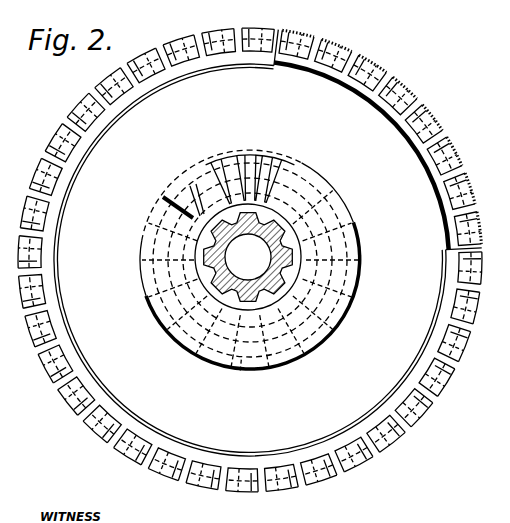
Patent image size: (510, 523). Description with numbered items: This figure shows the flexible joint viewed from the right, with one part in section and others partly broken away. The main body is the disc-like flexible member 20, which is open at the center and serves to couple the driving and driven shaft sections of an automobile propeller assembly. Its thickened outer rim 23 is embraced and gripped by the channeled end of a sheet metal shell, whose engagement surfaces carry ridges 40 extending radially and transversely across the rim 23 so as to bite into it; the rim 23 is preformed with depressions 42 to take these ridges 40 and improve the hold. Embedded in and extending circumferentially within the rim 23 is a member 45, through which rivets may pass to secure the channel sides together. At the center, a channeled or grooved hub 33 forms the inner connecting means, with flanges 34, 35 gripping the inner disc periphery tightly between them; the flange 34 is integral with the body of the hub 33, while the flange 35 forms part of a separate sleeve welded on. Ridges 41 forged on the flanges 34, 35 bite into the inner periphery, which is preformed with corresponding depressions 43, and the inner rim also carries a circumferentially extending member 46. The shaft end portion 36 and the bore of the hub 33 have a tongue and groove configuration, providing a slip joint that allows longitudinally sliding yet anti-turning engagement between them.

The disc-like flexible member 20 is at (250, 260).
The rim 23 is at (450, 181).
The hub 33 is at (282, 220).
The flange 34 is at (226, 162).
The flange 35 is at (340, 303).
The shaft end portion 36 is at (288, 244).
The ridges 40 is at (199, 46).
The ridges 41 is at (252, 172).
The depressions 42 is at (300, 31).
The depressions 43 is at (195, 220).
The embedded circumferential member 45 is at (425, 118).
The circumferentially extending member 46 is at (240, 372).